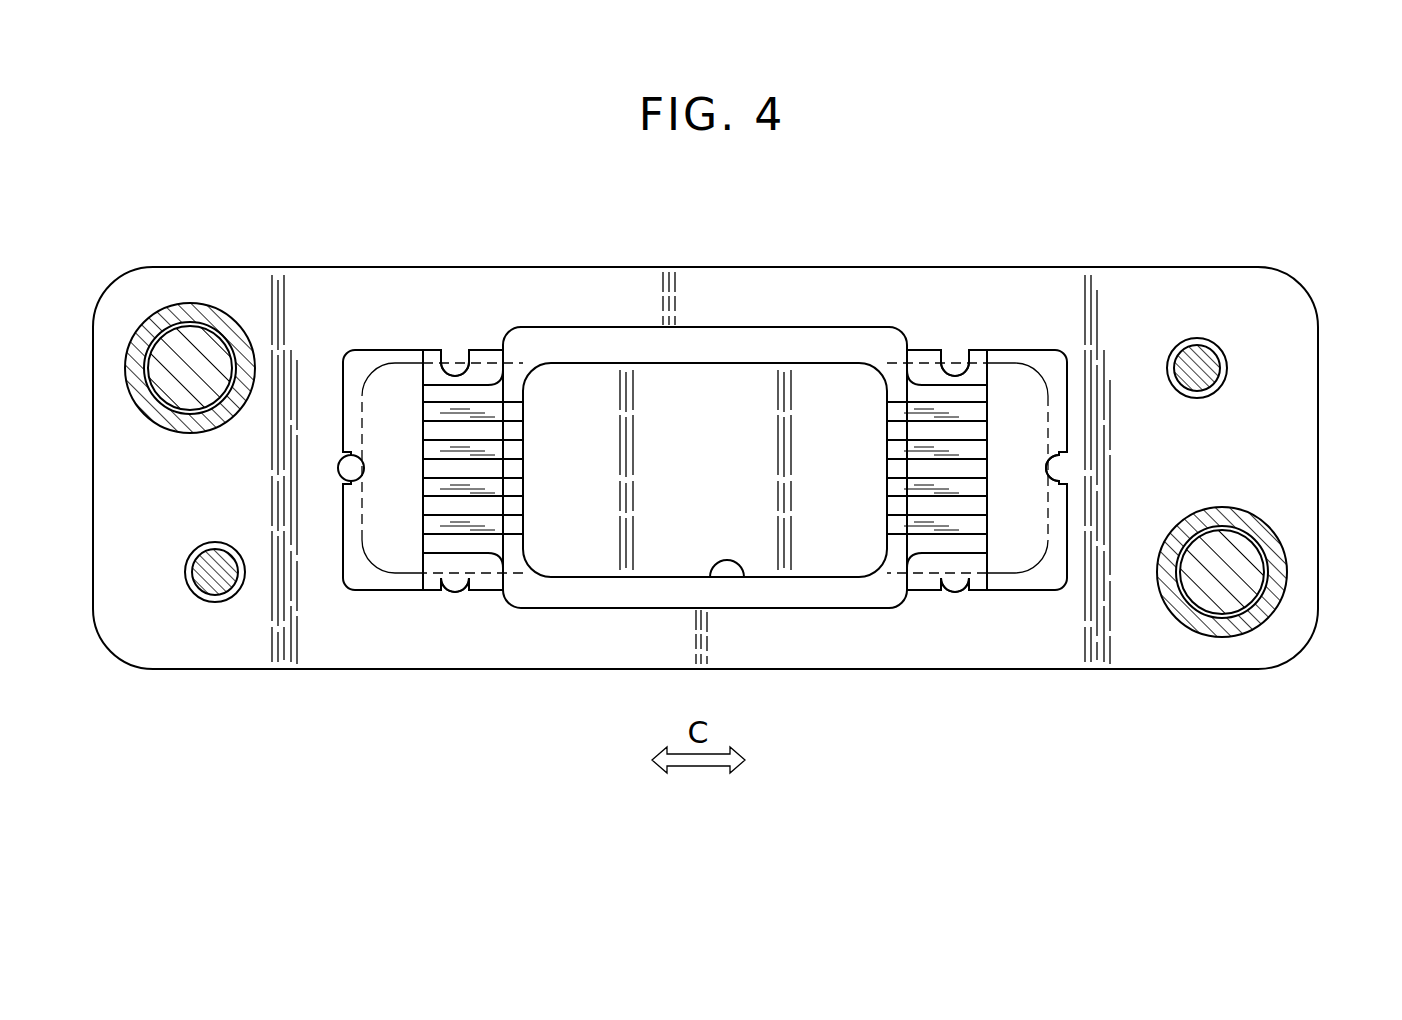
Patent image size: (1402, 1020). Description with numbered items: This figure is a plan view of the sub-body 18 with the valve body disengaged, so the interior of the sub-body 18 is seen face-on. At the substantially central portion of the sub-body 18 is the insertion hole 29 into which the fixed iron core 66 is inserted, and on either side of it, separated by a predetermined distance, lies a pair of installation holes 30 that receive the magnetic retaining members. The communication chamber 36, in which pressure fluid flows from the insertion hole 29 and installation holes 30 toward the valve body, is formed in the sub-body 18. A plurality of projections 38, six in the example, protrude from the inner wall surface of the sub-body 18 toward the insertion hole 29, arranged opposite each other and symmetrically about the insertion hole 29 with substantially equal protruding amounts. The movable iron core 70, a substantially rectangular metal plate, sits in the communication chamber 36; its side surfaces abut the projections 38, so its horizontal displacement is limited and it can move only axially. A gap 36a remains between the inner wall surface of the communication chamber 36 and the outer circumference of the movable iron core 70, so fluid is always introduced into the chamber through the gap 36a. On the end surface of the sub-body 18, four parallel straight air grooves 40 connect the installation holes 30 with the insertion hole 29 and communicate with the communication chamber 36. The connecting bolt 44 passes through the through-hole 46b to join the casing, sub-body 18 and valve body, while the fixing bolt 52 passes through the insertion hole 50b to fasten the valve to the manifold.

The sub-body 18 is at (1142, 286).
The insertion hole 29 is at (745, 577).
The installation holes 30 is at (422, 392).
The communication chamber 36 is at (365, 572).
The gap 36a is at (810, 340).
The projections 38 is at (447, 358).
The air grooves 40 is at (523, 503).
The connecting bolt 44 is at (198, 588).
The through-hole 46b is at (196, 565).
The insertion hole 50b is at (185, 305).
The fixing bolt 52 is at (158, 370).
The fixed iron core 66 is at (705, 388).
The movable iron core 70 is at (402, 537).